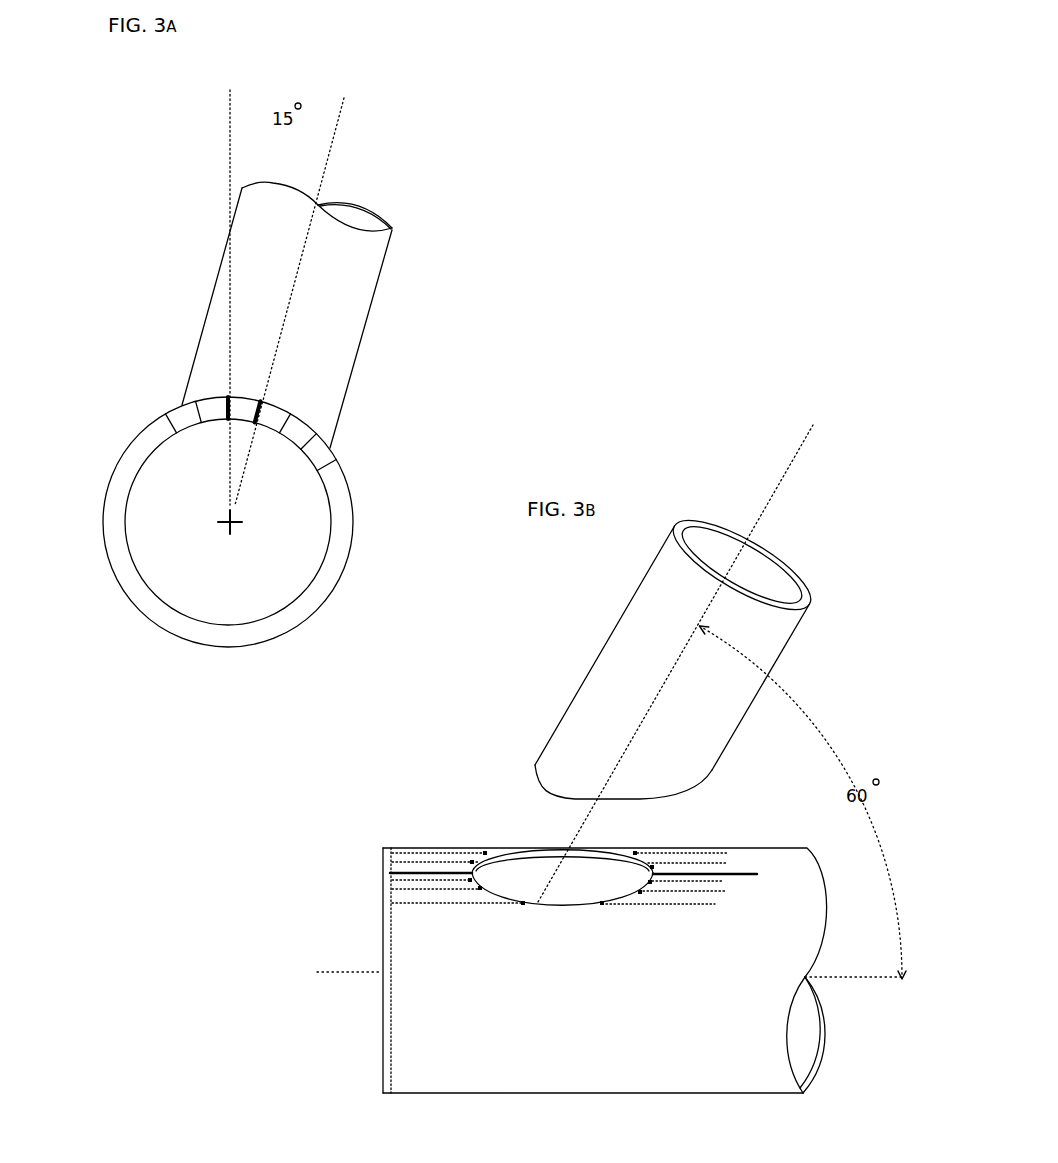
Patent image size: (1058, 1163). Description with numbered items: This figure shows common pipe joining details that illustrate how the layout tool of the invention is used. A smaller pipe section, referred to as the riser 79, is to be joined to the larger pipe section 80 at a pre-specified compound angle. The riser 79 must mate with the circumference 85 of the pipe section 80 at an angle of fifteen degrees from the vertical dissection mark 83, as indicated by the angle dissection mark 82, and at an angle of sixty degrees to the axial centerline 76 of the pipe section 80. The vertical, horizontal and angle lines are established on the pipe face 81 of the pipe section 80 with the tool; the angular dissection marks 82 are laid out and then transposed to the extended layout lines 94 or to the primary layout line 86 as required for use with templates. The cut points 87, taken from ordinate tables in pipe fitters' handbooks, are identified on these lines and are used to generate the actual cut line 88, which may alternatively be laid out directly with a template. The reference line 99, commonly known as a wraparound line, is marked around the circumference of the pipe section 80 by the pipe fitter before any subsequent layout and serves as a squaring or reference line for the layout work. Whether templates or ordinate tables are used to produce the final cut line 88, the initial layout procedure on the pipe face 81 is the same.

In FIG. 3B, the axial centerline 76 is at (348, 975).
In FIG. 3A, the riser 79 is at (357, 298).
In FIG. 3B, the riser 79 is at (827, 637).
In FIG. 3A, the pipe section 80 is at (115, 422).
In FIG. 3B, the pipe section 80 is at (400, 788).
In FIG. 3A, the pipe face 81 is at (117, 490).
In FIG. 3B, the pipe face 81 is at (383, 910).
In FIG. 3A, the angle dissection mark 82 is at (277, 420).
In FIG. 3A, the vertical dissection mark 83 is at (180, 405).
In FIG. 3A, the circumference 85 is at (350, 543).
In FIG. 3B, the primary layout line 86 is at (408, 870).
In FIG. 3B, the cut points 87 is at (482, 888).
In FIG. 3B, the cut line 88 is at (627, 897).
In FIG. 3B, the extended layout lines 94 is at (433, 850).
In FIG. 3B, the reference line 99 is at (392, 1013).